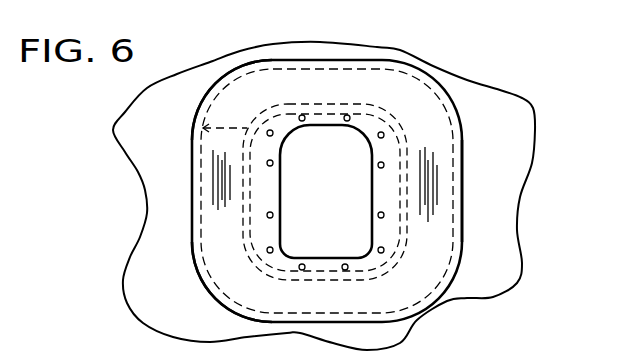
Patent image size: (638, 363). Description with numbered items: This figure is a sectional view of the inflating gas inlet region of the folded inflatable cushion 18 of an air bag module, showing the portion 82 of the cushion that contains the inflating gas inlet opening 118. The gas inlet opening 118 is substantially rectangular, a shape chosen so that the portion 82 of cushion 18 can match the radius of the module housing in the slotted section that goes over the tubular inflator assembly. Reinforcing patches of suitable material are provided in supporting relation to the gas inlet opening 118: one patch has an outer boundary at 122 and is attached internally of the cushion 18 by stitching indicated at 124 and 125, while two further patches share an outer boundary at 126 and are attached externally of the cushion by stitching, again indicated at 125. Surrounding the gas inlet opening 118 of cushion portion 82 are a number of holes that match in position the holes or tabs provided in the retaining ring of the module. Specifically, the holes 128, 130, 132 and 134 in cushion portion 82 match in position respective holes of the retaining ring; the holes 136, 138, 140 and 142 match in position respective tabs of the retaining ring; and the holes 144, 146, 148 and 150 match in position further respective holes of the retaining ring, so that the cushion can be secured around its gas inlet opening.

The folded inflatable cushion 18 is at (509, 102).
The portion of the folded inflatable cushion 82 is at (452, 156).
The inflating gas inlet opening 118 is at (294, 152).
The outer boundary of patch 119 122 is at (190, 143).
The stitching 124 is at (196, 263).
The stitching 125 is at (200, 256).
The outer boundary of patches 120 and 121 126 is at (192, 124).
The hole 128 is at (302, 270).
The hole 130 is at (347, 270).
The hole 132 is at (302, 115).
The hole 134 is at (348, 115).
The hole 136 is at (267, 163).
The hole 138 is at (267, 215).
The hole 140 is at (384, 166).
The hole 142 is at (384, 215).
The hole 144 is at (268, 130).
The hole 146 is at (268, 252).
The hole 148 is at (382, 132).
The hole 150 is at (384, 252).